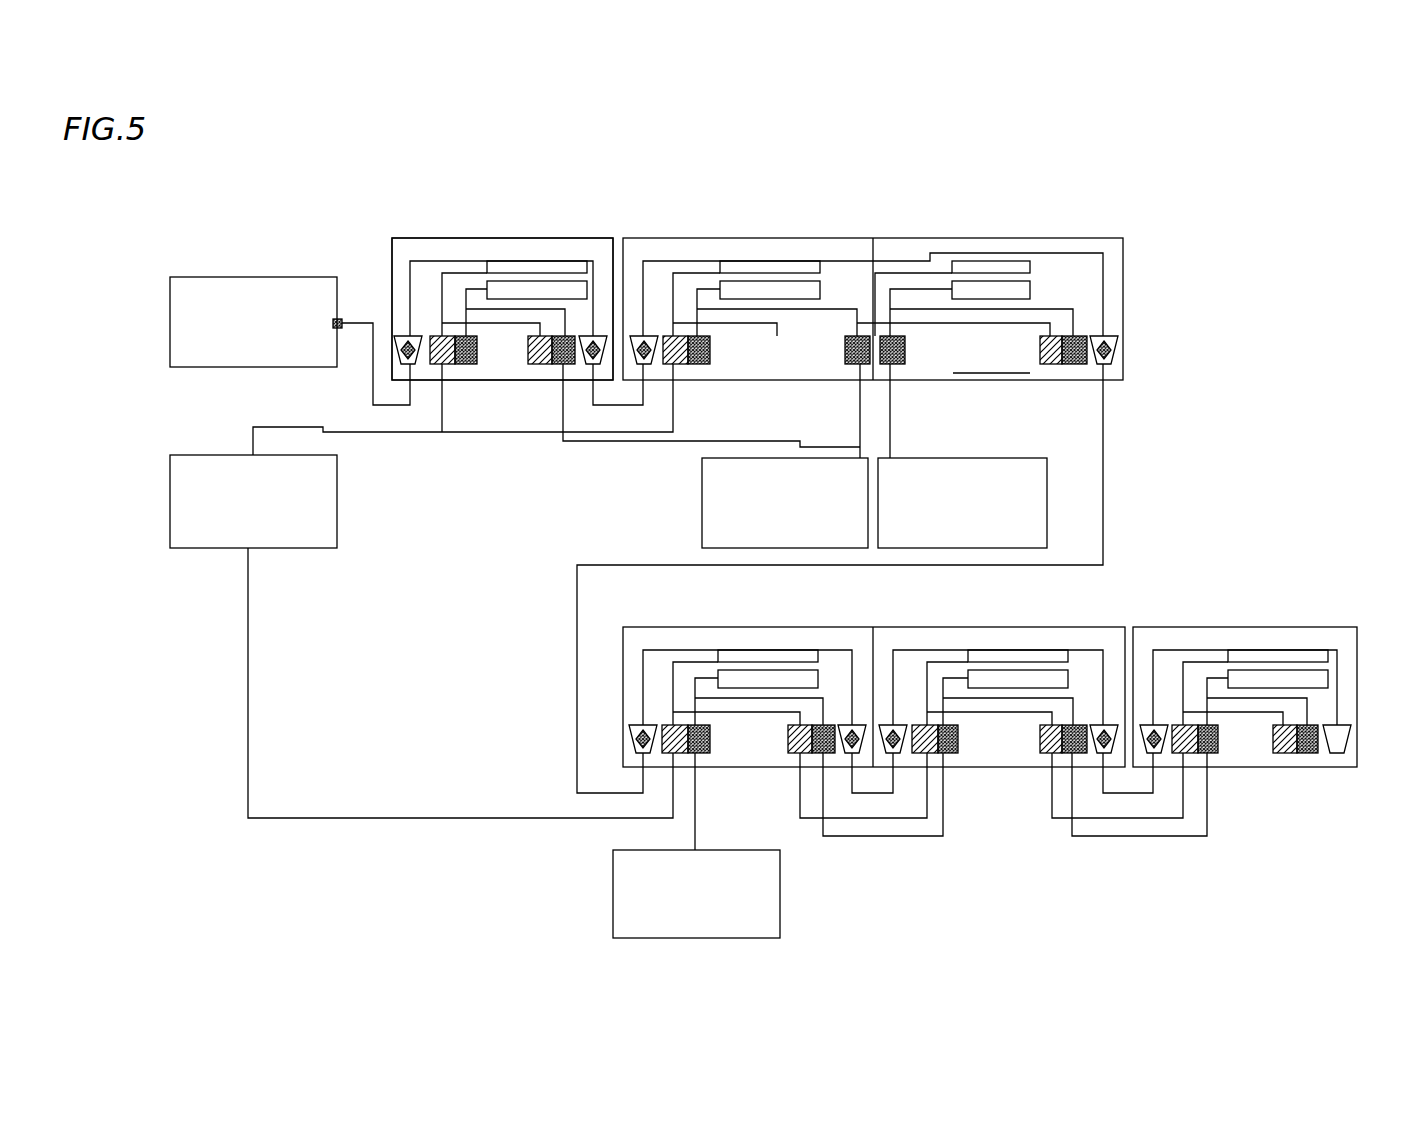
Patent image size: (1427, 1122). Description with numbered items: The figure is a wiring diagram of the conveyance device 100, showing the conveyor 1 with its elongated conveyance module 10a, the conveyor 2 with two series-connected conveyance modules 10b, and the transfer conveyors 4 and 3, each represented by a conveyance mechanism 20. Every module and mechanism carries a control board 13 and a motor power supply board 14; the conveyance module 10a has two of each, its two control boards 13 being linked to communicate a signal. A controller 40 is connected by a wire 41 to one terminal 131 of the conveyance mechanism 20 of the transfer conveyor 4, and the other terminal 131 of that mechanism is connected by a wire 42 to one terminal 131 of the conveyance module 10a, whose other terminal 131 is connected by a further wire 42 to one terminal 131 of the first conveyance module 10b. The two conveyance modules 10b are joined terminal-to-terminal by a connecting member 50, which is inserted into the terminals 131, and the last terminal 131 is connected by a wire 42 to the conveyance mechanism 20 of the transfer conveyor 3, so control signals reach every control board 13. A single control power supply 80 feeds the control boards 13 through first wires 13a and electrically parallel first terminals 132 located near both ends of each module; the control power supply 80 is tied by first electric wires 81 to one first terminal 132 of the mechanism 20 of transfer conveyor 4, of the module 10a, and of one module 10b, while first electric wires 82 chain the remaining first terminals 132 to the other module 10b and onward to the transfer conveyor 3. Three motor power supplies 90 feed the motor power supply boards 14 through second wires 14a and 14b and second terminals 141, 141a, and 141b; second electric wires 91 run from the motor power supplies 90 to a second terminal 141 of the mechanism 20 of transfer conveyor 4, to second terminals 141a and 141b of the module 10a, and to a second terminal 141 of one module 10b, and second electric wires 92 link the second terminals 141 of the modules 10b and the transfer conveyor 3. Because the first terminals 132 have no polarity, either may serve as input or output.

The conveyor 1 is at (1036, 224).
The conveyor 2 is at (960, 859).
The transfer conveyor 3 is at (1332, 583).
The transfer conveyor 4 is at (417, 221).
The conveyance module 10a is at (882, 238).
The conveyance module 10b is at (688, 627).
The control board 13 is at (505, 261).
The first wire 13a is at (727, 330).
The motor power supply board 14 is at (557, 281).
The second wire 14a is at (779, 324).
The second wire 14b is at (991, 355).
The conveyance mechanism 20 is at (462, 238).
The controller 40 is at (307, 277).
The wire 41 is at (373, 385).
The wire 42 is at (565, 438).
The connecting member 50 is at (872, 856).
The control power supply 80 is at (340, 470).
The first electric wire 81 is at (492, 433).
The first electric wire 82 is at (800, 816).
The motor power supply 90 is at (700, 470).
The second electric wire 91 is at (858, 432).
The second electric wire 92 is at (947, 822).
The conveyance device 100 is at (1281, 192).
The terminal 131 is at (406, 336).
The first terminal 132 is at (443, 336).
The second terminal 141 is at (466, 366).
The second terminal 141a is at (695, 366).
The second terminal 141b is at (895, 368).